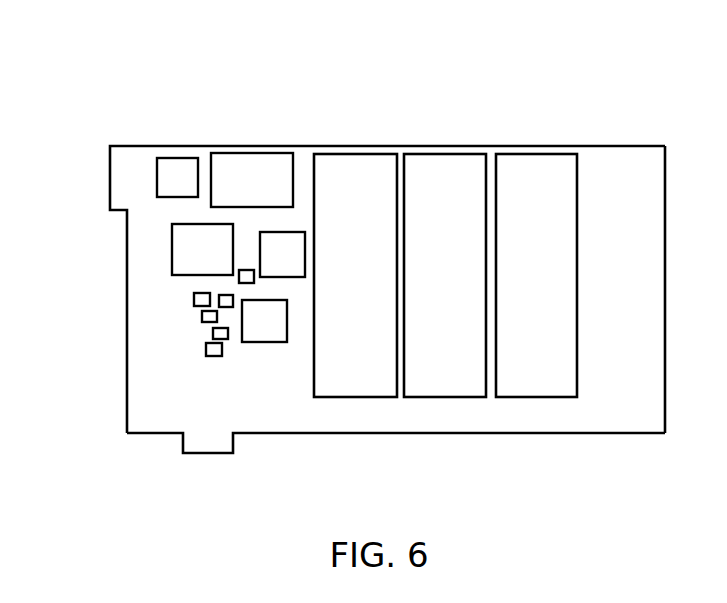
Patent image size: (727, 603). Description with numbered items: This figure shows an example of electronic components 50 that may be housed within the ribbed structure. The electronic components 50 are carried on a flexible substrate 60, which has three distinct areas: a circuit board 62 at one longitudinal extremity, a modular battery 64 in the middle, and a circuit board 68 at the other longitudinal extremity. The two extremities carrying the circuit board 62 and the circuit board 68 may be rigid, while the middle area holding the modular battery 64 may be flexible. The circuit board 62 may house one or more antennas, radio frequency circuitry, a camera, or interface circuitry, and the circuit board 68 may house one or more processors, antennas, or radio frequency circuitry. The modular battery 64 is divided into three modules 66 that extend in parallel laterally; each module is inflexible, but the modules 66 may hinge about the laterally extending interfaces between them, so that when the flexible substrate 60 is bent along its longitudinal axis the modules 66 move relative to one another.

The electronic components 50 is at (60, 107).
The flexible substrate 60 is at (622, 146).
The circuit board 62 is at (152, 368).
The modular battery 64 is at (443, 413).
The modules 66 is at (335, 281).
The circuit board 68 is at (602, 344).